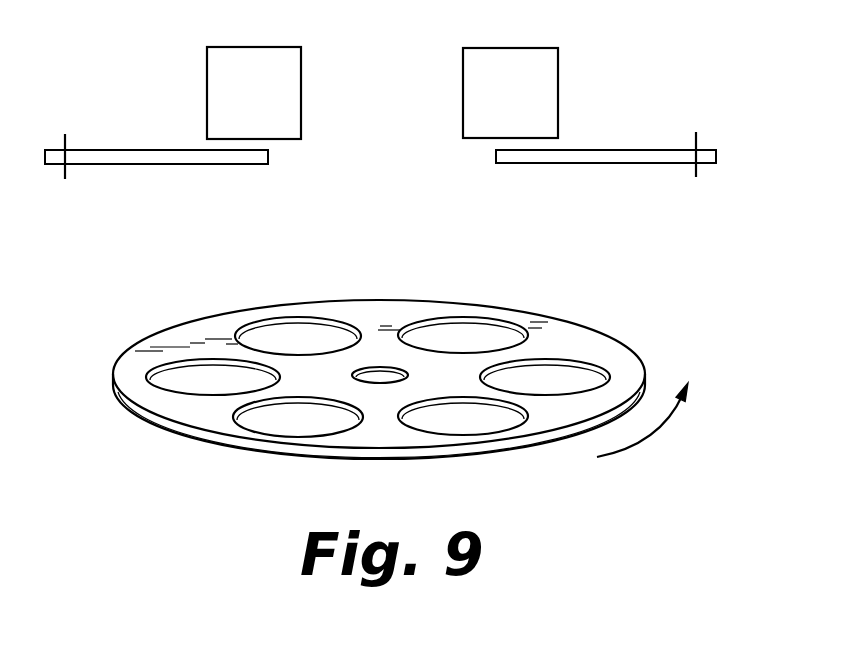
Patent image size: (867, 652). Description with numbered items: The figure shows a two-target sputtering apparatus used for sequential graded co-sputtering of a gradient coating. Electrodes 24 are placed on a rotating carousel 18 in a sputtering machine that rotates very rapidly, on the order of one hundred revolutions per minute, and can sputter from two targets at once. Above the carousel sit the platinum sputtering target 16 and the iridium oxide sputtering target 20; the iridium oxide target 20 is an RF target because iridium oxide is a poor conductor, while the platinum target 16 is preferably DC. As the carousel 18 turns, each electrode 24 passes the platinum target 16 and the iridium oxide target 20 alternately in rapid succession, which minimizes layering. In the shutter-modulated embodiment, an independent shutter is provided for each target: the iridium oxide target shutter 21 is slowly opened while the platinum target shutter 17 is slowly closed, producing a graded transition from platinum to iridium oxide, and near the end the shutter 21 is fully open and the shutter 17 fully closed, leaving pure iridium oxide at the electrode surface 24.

The iridium oxide sputtering target 20 is at (242, 106).
The platinum sputtering target 16 is at (495, 106).
The iridium oxide target shutter 21 is at (193, 164).
The platinum target shutter 17 is at (563, 163).
The rotating carousel 18 is at (379, 376).
The electrode 24 is at (470, 410).